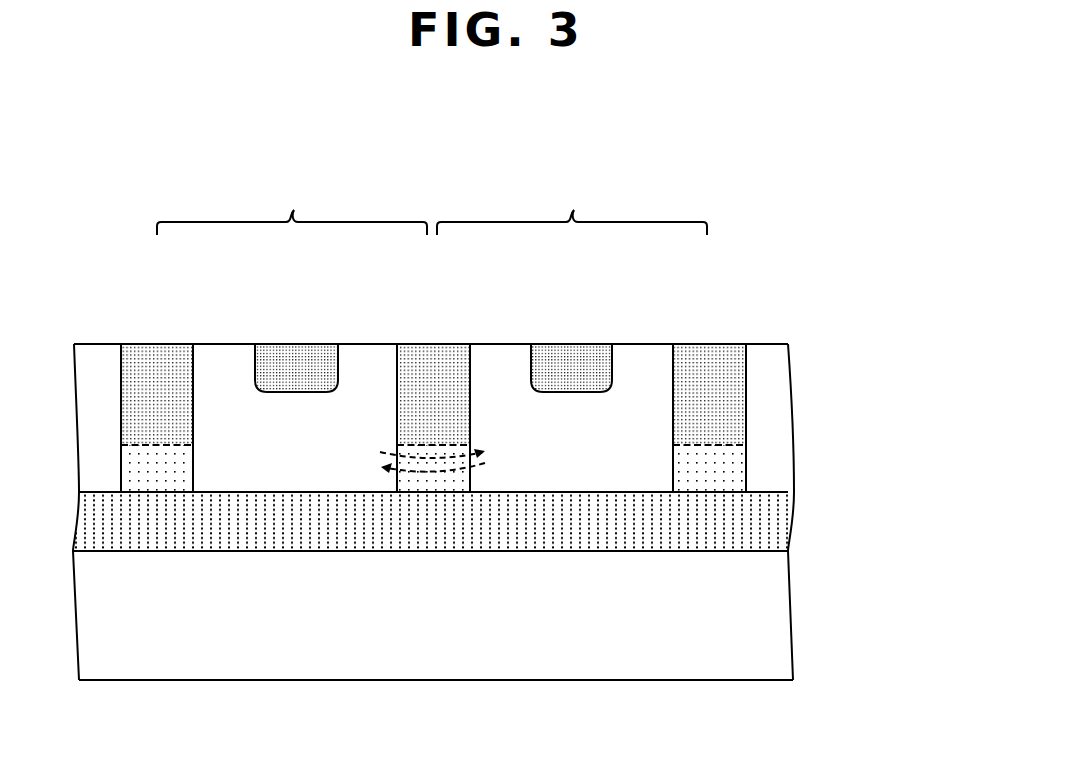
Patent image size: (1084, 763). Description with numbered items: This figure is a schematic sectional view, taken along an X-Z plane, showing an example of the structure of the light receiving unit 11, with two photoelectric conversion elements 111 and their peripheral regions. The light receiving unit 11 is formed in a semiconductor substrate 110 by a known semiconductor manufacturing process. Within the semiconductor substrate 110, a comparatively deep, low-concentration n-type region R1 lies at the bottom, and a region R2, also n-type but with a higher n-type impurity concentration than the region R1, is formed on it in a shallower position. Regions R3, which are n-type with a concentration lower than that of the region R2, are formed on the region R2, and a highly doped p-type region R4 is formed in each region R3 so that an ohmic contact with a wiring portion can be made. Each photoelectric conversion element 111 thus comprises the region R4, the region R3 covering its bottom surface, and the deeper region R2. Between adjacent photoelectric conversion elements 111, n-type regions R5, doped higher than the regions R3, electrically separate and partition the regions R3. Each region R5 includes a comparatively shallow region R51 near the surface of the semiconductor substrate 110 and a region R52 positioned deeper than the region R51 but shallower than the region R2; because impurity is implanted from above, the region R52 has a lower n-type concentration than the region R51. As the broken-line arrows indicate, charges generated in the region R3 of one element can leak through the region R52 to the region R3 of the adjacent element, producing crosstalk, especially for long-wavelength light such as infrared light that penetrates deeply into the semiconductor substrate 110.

The light receiving unit 11 is at (126, 167).
The photoelectric conversion element 111 is at (432, 205).
The semiconductor substrate 110 is at (747, 680).
The region R1 is at (782, 610).
The region R2 is at (780, 517).
The region R3 is at (232, 350).
The region R4 is at (290, 350).
The region R5 is at (523, 502).
The region R51 is at (397, 361).
The region R52 is at (738, 466).